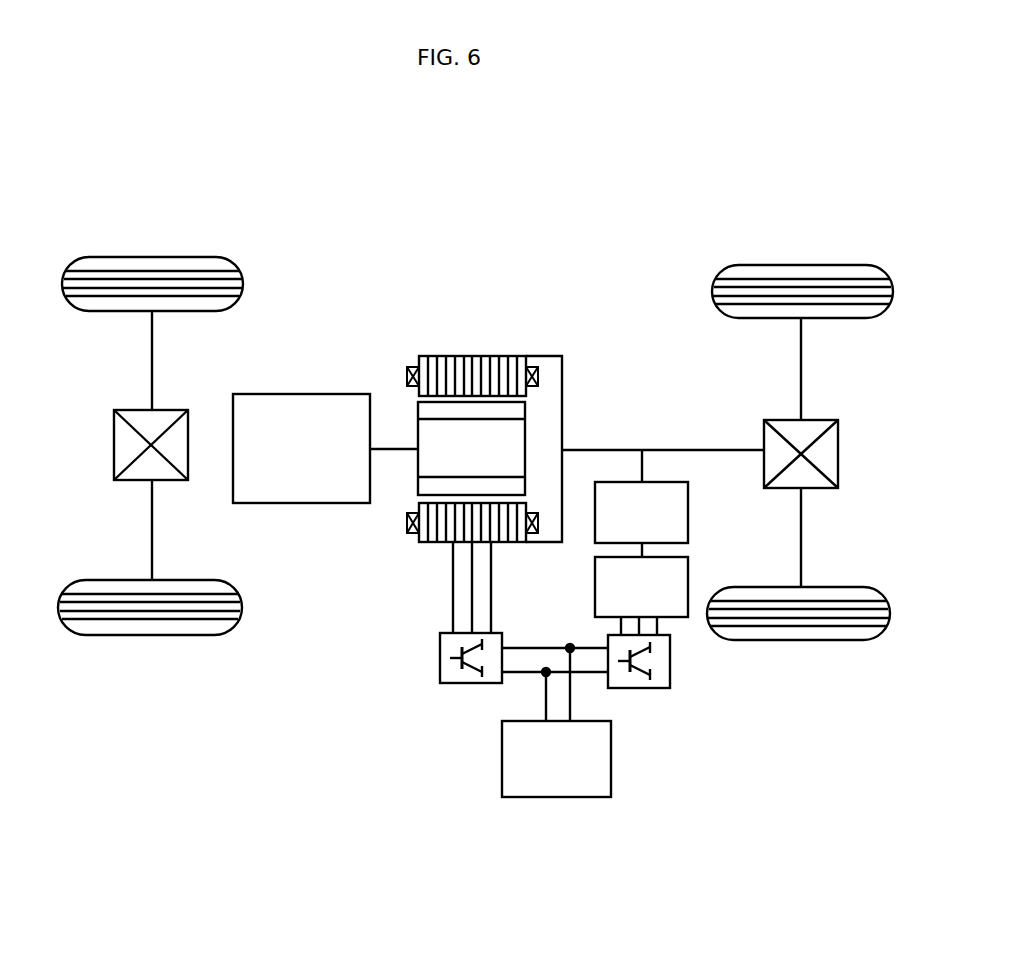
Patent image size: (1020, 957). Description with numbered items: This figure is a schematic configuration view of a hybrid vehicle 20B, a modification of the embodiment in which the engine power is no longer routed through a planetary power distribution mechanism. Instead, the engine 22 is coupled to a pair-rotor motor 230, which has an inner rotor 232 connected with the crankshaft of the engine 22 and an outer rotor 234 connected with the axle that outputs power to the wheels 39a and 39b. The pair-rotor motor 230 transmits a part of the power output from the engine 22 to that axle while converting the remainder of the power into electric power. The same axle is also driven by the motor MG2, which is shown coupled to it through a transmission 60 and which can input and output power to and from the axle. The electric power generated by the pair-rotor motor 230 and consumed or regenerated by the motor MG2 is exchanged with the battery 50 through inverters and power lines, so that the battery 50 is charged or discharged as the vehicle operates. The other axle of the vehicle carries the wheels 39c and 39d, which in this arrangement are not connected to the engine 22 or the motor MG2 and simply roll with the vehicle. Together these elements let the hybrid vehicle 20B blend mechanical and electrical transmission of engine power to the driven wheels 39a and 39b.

The hybrid vehicle 20B is at (598, 174).
The engine 22 is at (300, 503).
The pair-rotor motor 230 is at (467, 362).
The inner rotor 232 is at (418, 437).
The outer rotor 234 is at (387, 222).
The wheel 39a is at (804, 265).
The wheel 39b is at (799, 640).
The wheel 39c is at (153, 257).
The wheel 39d is at (152, 635).
The battery 50 is at (611, 760).
The transmission 60 is at (688, 521).
The motor MG2 is at (595, 588).